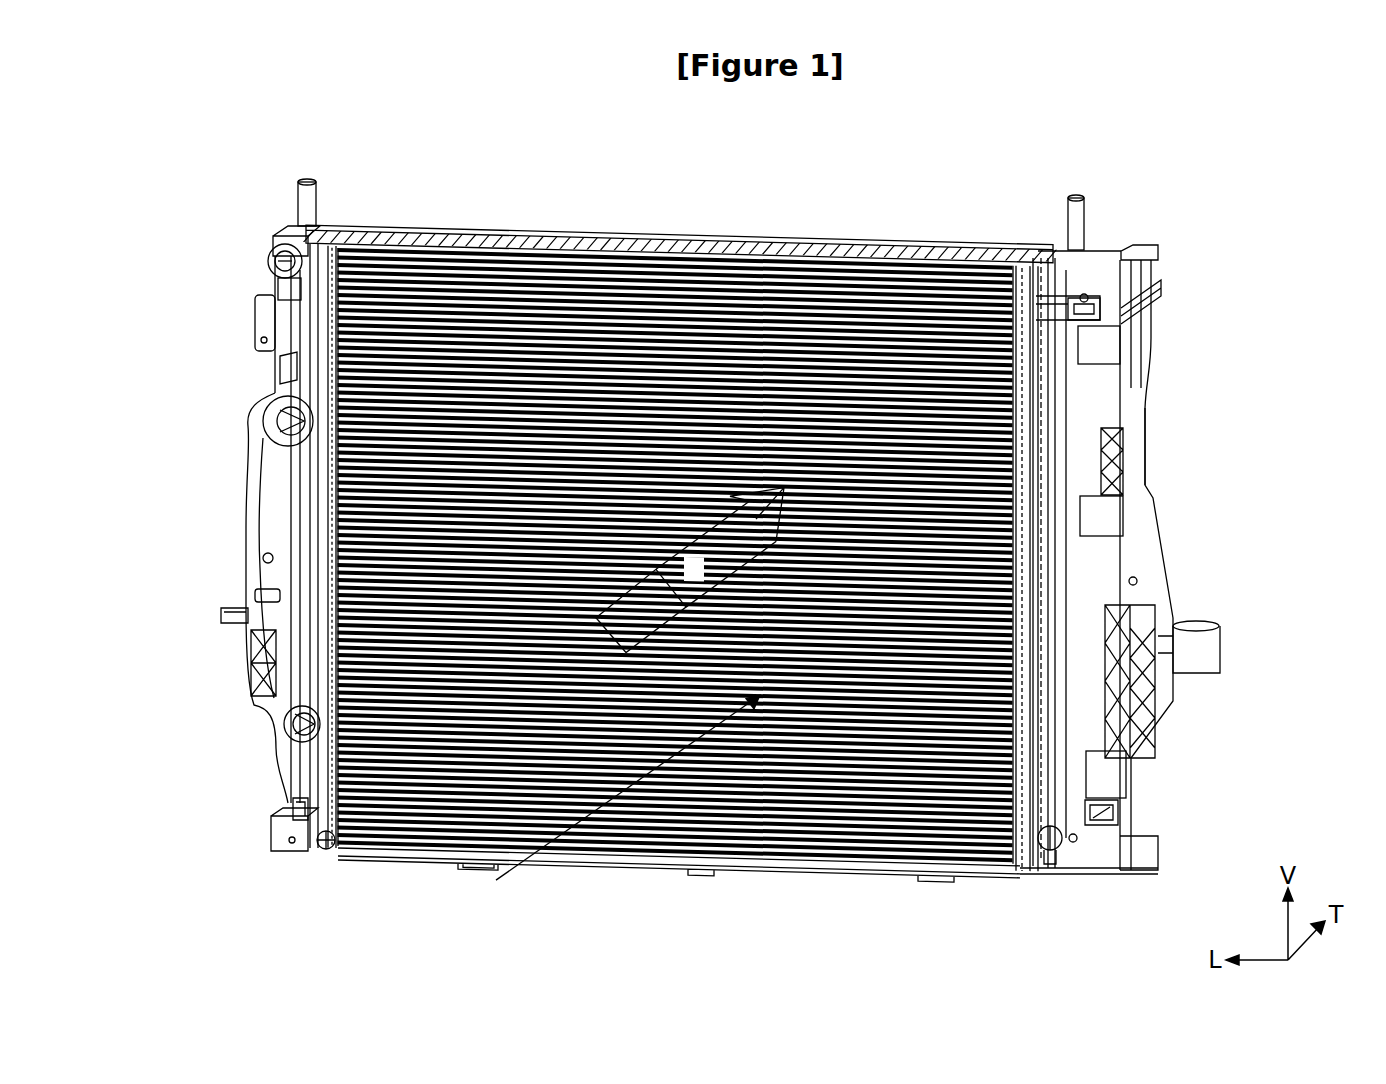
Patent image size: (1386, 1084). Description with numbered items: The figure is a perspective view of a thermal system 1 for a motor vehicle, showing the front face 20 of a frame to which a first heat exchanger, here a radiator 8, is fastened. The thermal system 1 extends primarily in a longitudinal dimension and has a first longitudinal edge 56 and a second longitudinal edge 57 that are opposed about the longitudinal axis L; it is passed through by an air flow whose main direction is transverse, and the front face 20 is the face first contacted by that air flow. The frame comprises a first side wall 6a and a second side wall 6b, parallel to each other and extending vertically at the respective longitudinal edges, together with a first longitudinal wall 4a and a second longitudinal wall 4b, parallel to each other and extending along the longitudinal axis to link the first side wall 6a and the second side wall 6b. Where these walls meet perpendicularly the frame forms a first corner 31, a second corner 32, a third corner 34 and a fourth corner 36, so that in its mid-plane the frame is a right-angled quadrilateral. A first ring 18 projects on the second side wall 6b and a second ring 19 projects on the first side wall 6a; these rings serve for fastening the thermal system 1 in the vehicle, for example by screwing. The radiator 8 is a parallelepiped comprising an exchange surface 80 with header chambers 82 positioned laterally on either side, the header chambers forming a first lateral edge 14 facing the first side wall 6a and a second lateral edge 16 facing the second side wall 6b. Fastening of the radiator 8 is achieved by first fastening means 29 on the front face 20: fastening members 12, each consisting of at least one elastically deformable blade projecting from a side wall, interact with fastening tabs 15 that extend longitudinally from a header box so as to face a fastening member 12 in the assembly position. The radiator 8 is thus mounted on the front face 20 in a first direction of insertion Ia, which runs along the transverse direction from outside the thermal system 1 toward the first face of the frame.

The thermal system 1 is at (188, 182).
The first longitudinal wall 4a is at (535, 222).
The second longitudinal wall 4b is at (592, 855).
The first side wall 6a is at (262, 450).
The second side wall 6b is at (1078, 452).
The radiator 8 is at (612, 313).
The header chambers 82 is at (1040, 605).
The fastening members 12 is at (1092, 292).
The first lateral edge 14 is at (318, 648).
The fastening tabs 15 is at (1073, 350).
The second lateral edge 16 is at (1032, 540).
The first ring 18 is at (1197, 648).
The second ring 19 is at (232, 600).
The front face 20 is at (830, 856).
The first fastening means 29 is at (1078, 266).
The first corner 31 is at (308, 222).
The second corner 32 is at (1030, 242).
The third corner 34 is at (1030, 858).
The fourth corner 36 is at (318, 840).
The first longitudinal edge 56 is at (211, 323).
The second longitudinal edge 57 is at (1260, 480).
The exchange surface 80 is at (474, 772).
The first direction of insertion Ia is at (490, 866).